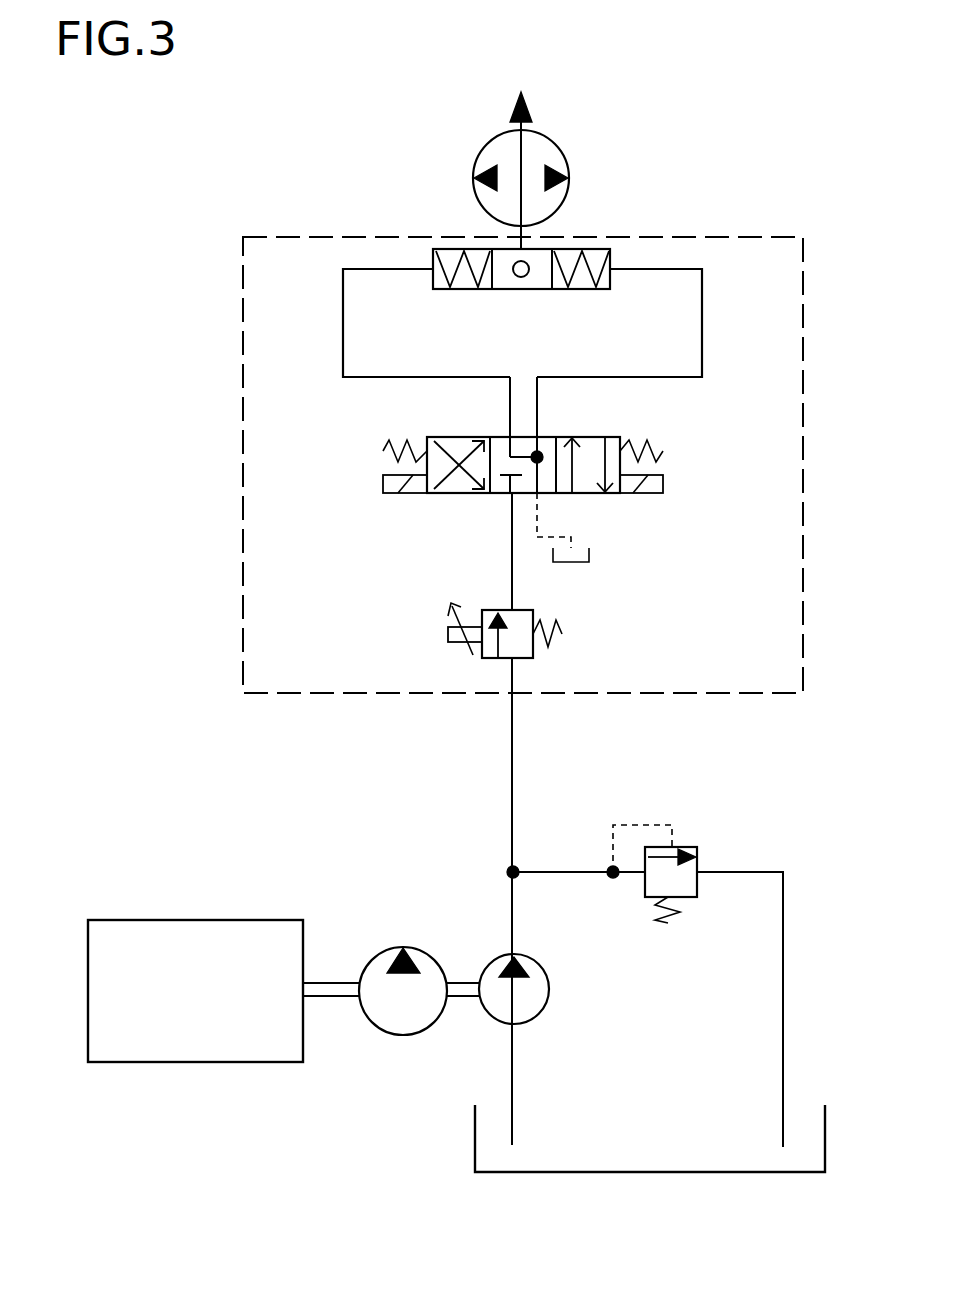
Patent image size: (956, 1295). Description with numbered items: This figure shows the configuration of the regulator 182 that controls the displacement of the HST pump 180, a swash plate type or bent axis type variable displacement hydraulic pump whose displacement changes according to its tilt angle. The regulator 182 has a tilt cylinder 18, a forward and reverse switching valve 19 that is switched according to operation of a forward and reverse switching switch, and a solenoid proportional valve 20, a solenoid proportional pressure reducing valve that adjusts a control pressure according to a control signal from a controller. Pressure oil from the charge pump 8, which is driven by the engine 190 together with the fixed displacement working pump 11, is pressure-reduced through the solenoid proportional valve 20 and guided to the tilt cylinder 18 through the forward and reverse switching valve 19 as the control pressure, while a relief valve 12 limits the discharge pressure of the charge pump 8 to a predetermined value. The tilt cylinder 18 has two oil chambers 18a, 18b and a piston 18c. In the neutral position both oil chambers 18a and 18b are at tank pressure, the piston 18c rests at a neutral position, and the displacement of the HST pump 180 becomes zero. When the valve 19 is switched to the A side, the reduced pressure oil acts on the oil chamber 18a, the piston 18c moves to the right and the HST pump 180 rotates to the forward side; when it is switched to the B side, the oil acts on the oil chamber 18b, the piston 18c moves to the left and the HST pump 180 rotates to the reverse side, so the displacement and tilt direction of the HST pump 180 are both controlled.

The HST pump 180 is at (482, 150).
The regulator 182 is at (280, 237).
The tilt cylinder 18 is at (597, 247).
The oil chamber 18a is at (463, 290).
The oil chamber 18b is at (578, 290).
The piston 18c is at (526, 291).
The forward and reverse switching valve 19 is at (620, 437).
The solenoid proportional valve 20 is at (485, 608).
The relief valve 12 is at (683, 860).
The charge pump 8 is at (547, 1005).
The working pump 11 is at (373, 1023).
The engine 190 is at (110, 918).